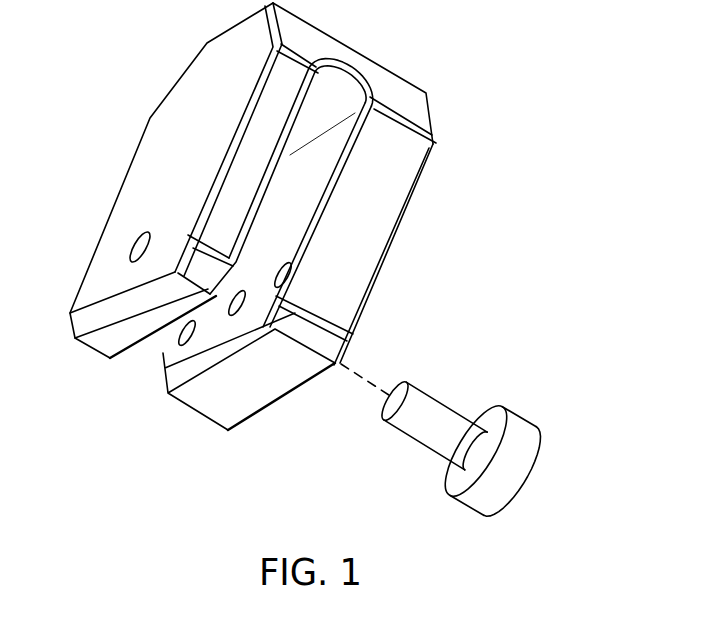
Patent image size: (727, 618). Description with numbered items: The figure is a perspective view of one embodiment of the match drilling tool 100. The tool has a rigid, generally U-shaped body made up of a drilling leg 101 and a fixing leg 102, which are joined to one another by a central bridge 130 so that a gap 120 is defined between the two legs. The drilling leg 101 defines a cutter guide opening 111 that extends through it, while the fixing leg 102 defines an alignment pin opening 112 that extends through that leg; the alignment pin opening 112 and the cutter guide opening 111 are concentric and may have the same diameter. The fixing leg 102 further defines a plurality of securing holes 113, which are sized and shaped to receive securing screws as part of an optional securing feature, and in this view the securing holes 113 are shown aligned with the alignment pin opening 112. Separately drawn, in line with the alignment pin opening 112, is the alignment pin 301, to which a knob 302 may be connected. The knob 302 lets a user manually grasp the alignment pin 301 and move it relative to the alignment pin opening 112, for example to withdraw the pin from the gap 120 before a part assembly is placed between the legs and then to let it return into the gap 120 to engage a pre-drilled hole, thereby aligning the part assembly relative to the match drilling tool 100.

The match drilling tool 100 is at (463, 68).
The drilling leg 101 is at (130, 163).
The fixing leg 102 is at (429, 184).
The central bridge 130 is at (348, 43).
The cutter guide opening 111 is at (130, 252).
The alignment pin opening 112 is at (226, 318).
The securing holes 113 is at (178, 345).
The gap 120 is at (152, 390).
The alignment pin 301 is at (440, 400).
The knob 302 is at (533, 432).